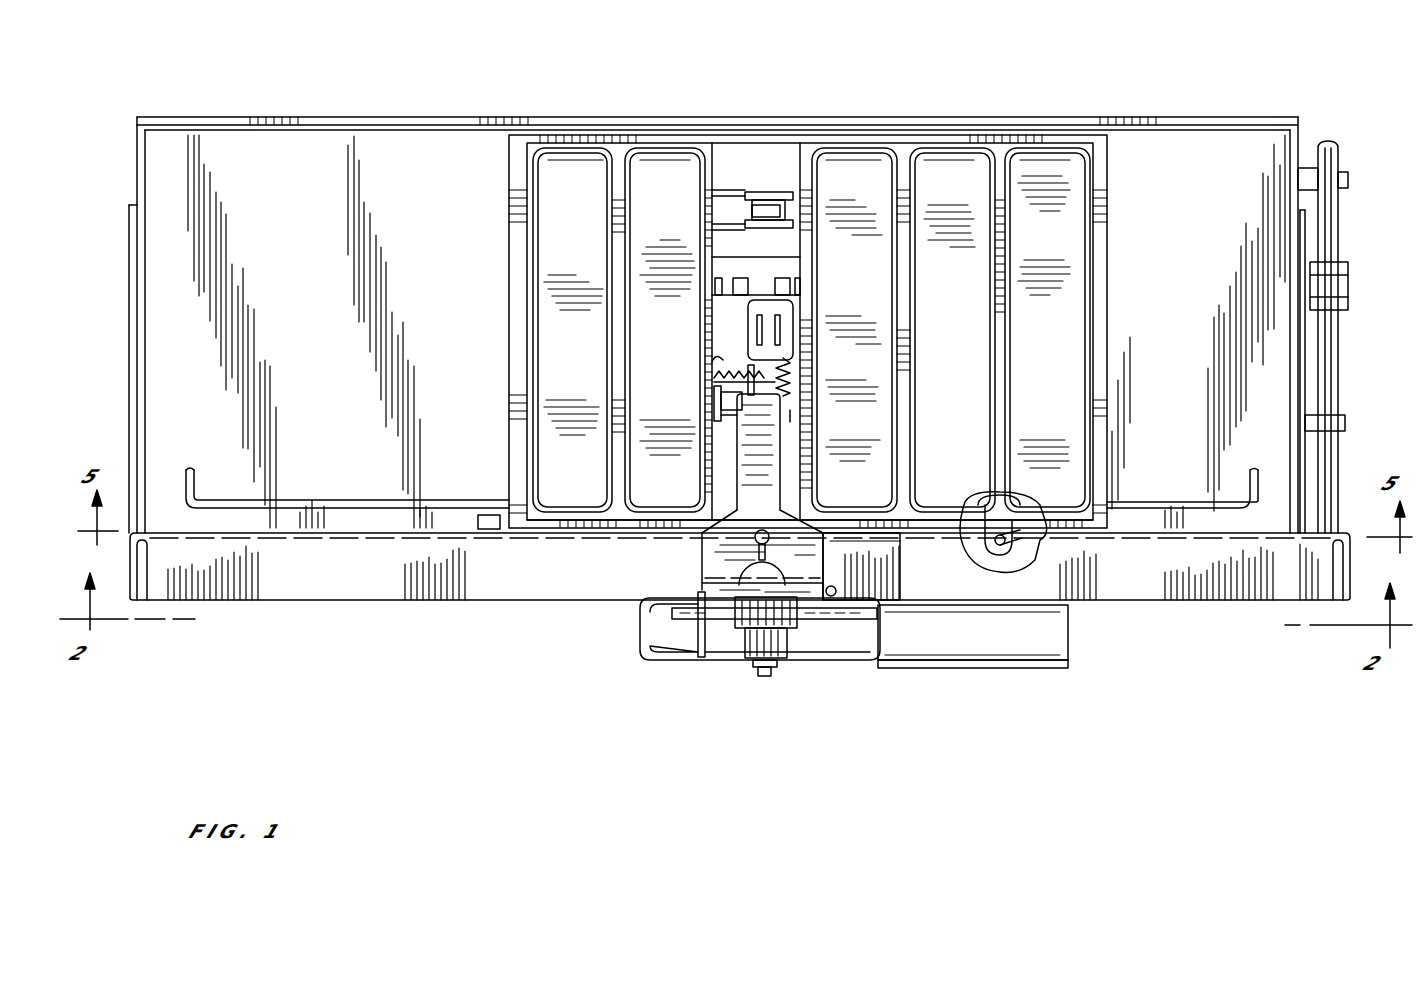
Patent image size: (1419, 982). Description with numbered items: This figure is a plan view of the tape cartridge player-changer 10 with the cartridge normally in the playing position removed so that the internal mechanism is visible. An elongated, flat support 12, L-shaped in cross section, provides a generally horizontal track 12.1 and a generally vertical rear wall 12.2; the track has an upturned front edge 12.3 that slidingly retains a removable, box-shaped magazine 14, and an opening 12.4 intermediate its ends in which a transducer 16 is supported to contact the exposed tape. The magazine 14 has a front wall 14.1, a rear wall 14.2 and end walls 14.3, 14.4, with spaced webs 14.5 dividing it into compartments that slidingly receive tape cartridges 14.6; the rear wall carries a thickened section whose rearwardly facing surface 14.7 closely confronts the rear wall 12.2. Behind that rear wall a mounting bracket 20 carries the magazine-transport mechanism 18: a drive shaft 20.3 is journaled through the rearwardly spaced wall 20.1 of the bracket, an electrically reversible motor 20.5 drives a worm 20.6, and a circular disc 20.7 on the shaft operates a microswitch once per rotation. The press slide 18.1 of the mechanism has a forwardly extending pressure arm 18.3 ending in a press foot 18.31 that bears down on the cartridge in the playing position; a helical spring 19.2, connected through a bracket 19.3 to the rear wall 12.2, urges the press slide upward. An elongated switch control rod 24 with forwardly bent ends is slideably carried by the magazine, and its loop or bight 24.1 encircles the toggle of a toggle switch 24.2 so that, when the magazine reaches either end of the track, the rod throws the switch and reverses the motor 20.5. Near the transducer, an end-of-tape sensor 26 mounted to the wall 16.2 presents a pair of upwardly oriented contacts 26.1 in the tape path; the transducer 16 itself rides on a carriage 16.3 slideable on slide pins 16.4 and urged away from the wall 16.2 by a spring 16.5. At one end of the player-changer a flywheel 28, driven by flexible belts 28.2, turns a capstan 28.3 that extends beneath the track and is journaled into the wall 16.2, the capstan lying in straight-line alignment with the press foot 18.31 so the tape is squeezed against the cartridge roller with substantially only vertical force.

The player-changer 10 is at (868, 733).
The support 12 is at (228, 116).
The track 12.1 is at (312, 378).
The rear wall 12.2 is at (322, 530).
The upturned front edge 12.3 is at (400, 120).
The opening 12.4 is at (795, 140).
The magazine 14 is at (505, 328).
The front wall 14.1 is at (555, 136).
The rear wall 14.2 is at (553, 525).
The end wall 14.3 is at (525, 350).
The end wall 14.4 is at (1100, 372).
The spaced webs 14.5 is at (1000, 330).
The tape cartridges 14.6 is at (598, 310).
The rearwardly facing surface 14.7 is at (1062, 545).
The transducer 16 is at (786, 306).
The wall 16.2 is at (756, 331).
The carriage 16.3 is at (732, 333).
The slide pins 16.4 is at (790, 380).
The spring 16.5 is at (722, 365).
The mechanism 18 is at (748, 676).
The press slide 18.1 is at (870, 540).
The pressure arm 18.3 is at (757, 462).
The press foot 18.31 is at (778, 400).
The helical spring 19.2 is at (833, 588).
The bracket 19.3 is at (688, 578).
The mounting bracket 20 is at (640, 636).
The rearwardly spaced wall 20.1 is at (665, 665).
The drive shaft 20.3 is at (766, 678).
The electric motor 20.5 is at (965, 652).
The worm 20.6 is at (795, 628).
The circular disc 20.7 is at (745, 642).
The switch control rod 24 is at (1158, 500).
The loop or bight 24.1 is at (1005, 545).
The toggle switch 24.2 is at (975, 560).
The end-of-tape sensor 26 is at (796, 205).
The contacts 26.1 is at (772, 192).
The flywheel 28 is at (1332, 378).
The flexible belts 28.2 is at (1327, 246).
The capstan 28.3 is at (790, 420).